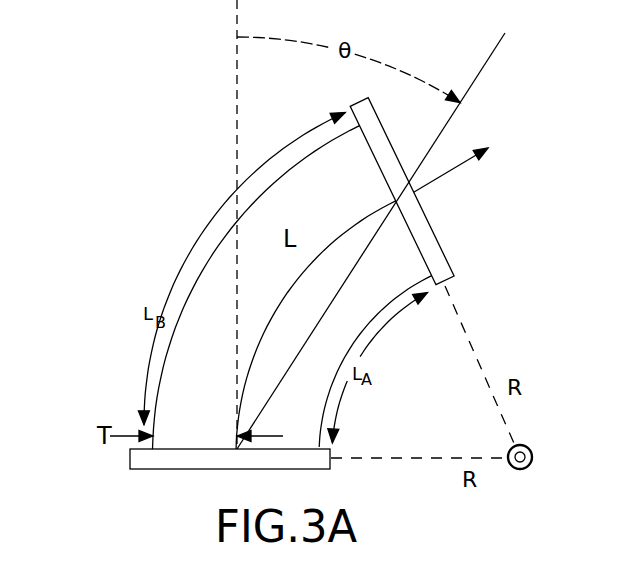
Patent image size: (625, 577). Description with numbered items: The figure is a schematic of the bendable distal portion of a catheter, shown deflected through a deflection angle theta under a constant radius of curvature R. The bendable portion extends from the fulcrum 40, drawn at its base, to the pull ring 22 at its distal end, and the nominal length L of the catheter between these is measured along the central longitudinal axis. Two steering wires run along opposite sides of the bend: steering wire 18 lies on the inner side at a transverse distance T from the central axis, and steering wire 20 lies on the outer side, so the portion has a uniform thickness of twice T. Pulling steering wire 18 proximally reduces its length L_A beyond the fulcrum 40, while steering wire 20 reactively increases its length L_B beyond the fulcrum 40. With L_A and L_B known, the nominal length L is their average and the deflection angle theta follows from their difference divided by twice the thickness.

The steering wire 18 is at (206, 262).
The steering wire 20 is at (383, 312).
The pull ring 22 is at (358, 102).
The fulcrum 40 is at (130, 459).